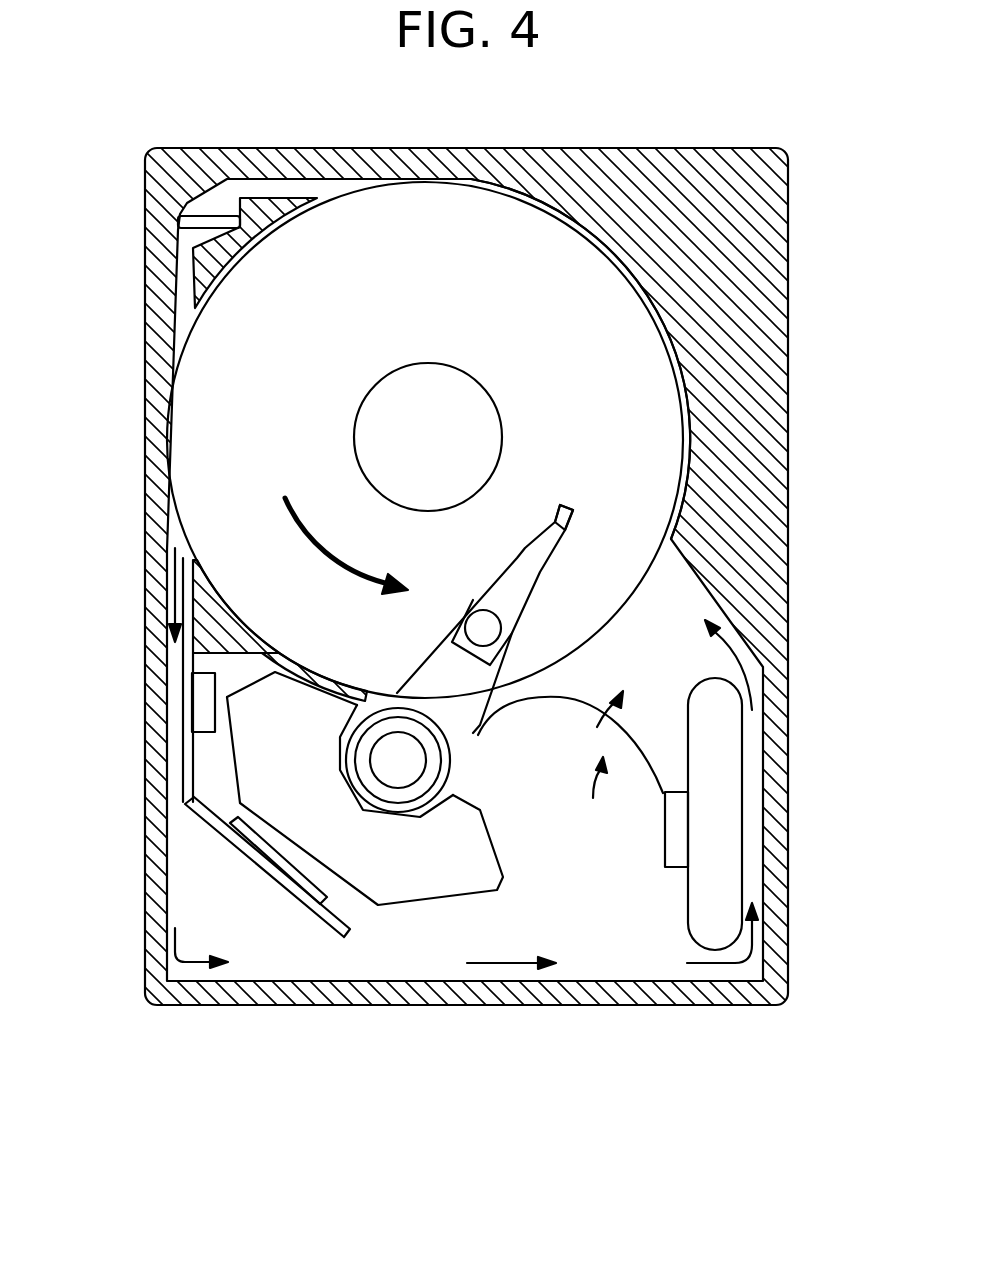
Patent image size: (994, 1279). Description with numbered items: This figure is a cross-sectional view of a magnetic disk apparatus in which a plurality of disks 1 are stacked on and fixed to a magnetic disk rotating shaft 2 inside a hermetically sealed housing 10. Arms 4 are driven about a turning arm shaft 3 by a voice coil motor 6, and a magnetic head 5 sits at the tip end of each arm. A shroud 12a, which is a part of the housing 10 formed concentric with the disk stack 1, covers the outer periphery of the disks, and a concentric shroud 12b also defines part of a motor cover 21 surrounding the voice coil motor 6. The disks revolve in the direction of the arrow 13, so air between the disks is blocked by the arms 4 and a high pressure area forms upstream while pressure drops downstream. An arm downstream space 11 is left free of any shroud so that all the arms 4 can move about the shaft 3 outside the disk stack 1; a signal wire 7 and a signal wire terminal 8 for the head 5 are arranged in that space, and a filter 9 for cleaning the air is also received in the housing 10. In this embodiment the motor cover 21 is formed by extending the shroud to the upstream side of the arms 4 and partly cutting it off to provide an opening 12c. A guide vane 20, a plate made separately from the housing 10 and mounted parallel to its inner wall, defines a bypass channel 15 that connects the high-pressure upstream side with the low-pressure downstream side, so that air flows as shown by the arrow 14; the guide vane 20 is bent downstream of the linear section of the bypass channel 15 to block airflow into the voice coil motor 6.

The disk 1 is at (615, 333).
The magnetic disk rotating shaft 2 is at (455, 383).
The turning arm shaft 3 is at (410, 765).
The arm 4 is at (488, 632).
The magnetic disk read/write head 5 is at (568, 512).
The voice coil motor 6 is at (392, 858).
The input/output signal wire 7 is at (590, 708).
The signal wire terminal 8 is at (720, 840).
The filter 9 is at (210, 223).
The housing 10 is at (147, 993).
The arm downstream space 11 is at (667, 607).
The shroud 12a is at (697, 423).
The shroud 12b is at (222, 625).
The opening 12c is at (178, 527).
The arrow 13 is at (272, 516).
The arrow 14 is at (498, 965).
The bypass channel 15 is at (173, 880).
The guide vane 20 is at (185, 742).
The motor cover 21 is at (192, 688).